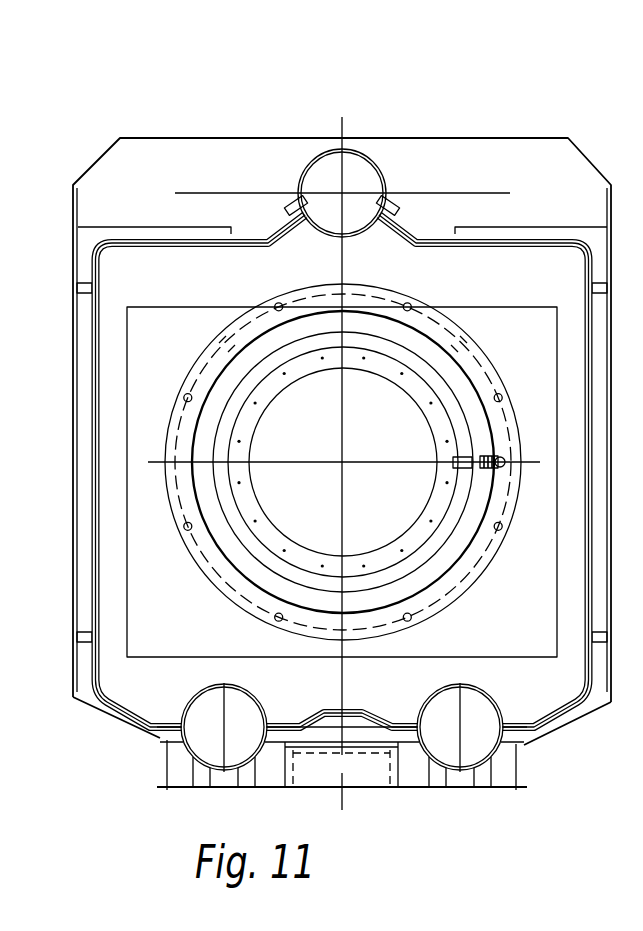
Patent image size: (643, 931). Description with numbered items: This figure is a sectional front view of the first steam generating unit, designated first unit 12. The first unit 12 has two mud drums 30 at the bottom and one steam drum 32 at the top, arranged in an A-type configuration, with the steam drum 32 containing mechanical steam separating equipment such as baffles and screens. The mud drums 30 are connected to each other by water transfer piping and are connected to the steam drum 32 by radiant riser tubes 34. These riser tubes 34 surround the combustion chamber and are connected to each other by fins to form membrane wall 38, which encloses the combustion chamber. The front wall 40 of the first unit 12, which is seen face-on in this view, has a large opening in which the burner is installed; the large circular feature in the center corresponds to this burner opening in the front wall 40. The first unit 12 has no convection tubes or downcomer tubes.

The first unit 12 is at (266, 124).
The mud drums 30 is at (477, 773).
The steam drum 32 is at (355, 150).
The radiant riser tubes 34 is at (155, 728).
The membrane wall 38 is at (112, 706).
The front wall 40 is at (412, 353).